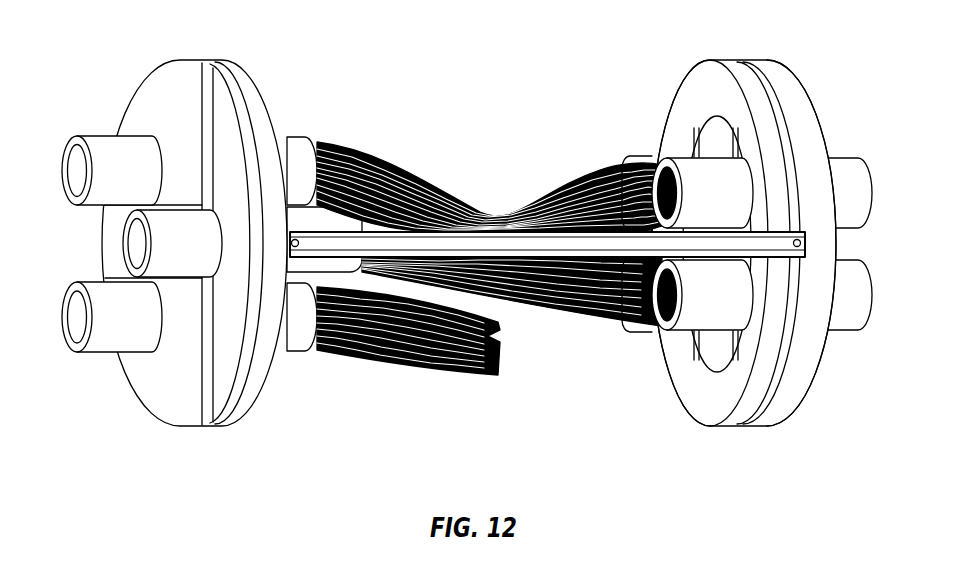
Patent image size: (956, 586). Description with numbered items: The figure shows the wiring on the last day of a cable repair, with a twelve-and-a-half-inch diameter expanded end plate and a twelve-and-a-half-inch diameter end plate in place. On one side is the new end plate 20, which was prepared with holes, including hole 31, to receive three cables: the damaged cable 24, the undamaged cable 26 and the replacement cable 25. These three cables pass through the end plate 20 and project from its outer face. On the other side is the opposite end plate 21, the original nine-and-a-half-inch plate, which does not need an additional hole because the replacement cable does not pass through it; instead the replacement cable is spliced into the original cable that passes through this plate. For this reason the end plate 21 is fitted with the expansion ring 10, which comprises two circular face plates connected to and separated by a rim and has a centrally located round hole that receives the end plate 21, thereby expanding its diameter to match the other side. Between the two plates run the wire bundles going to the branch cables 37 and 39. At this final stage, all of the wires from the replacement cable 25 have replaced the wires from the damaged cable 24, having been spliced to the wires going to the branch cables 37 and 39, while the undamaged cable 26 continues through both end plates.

The expansion ring 10 is at (688, 398).
The end plate 20 is at (165, 92).
The opposite end plate 21 is at (713, 138).
The damaged cable 24 is at (108, 333).
The replacement cable 25 is at (170, 243).
The undamaged cable 26 is at (108, 150).
The hole 31 is at (783, 70).
The branch cable 37 is at (640, 163).
The branch cable 39 is at (727, 187).